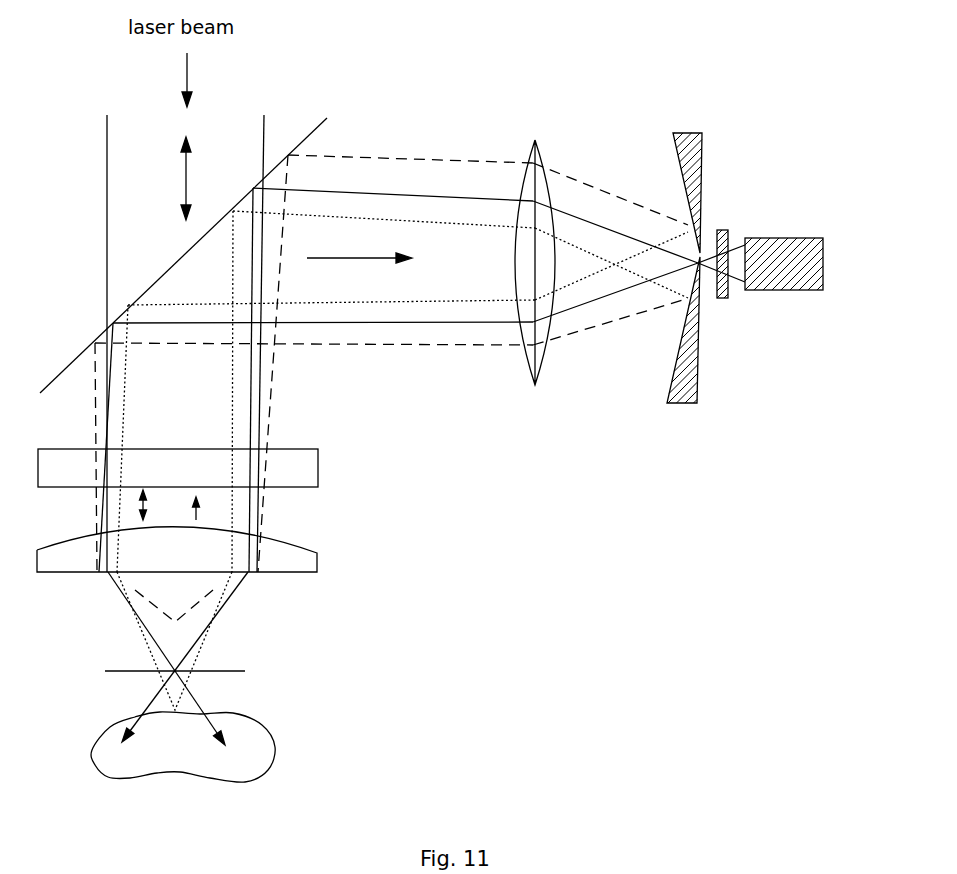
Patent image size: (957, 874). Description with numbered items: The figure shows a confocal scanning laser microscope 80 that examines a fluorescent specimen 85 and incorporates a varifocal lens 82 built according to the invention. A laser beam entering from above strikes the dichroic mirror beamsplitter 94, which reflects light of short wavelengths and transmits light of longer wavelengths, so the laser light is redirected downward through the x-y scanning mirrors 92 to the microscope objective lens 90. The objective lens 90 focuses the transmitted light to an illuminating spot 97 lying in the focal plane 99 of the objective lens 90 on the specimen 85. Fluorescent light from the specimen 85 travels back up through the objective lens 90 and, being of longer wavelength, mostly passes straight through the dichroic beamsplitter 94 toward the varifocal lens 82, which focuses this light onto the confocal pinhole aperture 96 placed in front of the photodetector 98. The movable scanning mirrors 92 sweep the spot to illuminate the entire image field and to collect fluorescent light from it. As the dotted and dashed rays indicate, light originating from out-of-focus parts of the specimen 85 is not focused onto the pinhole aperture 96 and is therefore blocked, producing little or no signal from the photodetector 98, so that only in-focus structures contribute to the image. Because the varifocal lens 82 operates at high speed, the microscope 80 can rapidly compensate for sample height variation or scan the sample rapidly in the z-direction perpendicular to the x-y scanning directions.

The confocal scanning laser microscope 80 is at (465, 667).
The varifocal lens 82 is at (528, 147).
The fluorescent specimen 85 is at (113, 762).
The microscope objective lens 90 is at (308, 563).
The x-y scanning mirrors 92 is at (310, 477).
The dichroic mirror beamsplitter 94 is at (156, 282).
The confocal pinhole aperture 96 is at (705, 238).
The illuminating spot 97 is at (176, 684).
The photodetector 98 is at (797, 290).
The focal plane 99 is at (236, 672).